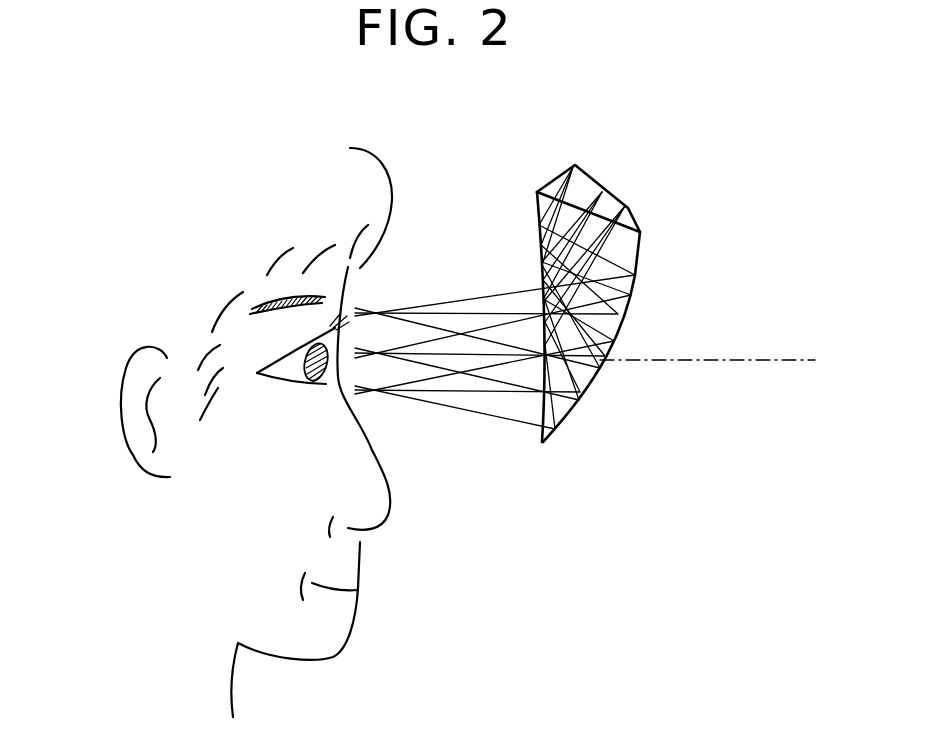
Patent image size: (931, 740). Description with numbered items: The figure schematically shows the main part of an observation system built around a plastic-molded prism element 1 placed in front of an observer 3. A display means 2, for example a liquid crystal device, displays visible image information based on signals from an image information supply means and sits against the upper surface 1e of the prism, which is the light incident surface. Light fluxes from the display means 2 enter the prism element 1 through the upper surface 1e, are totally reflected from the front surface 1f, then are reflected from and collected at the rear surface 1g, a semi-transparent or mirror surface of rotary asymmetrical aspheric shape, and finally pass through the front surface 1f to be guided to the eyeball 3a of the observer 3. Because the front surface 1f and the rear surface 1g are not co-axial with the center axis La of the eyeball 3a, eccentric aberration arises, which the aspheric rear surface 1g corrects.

The prism element 1 is at (543, 187).
The upper surface 1e is at (637, 225).
The front surface 1f is at (538, 228).
The rear surface 1g is at (617, 332).
The display means 2 is at (592, 168).
The observer 3 is at (273, 178).
The eyeball 3a is at (289, 383).
The center axis La is at (743, 358).